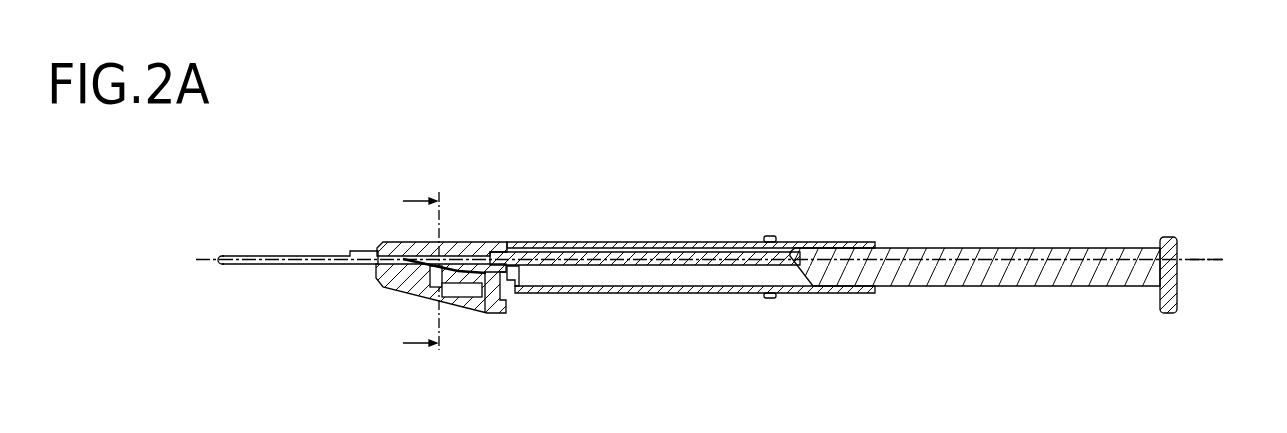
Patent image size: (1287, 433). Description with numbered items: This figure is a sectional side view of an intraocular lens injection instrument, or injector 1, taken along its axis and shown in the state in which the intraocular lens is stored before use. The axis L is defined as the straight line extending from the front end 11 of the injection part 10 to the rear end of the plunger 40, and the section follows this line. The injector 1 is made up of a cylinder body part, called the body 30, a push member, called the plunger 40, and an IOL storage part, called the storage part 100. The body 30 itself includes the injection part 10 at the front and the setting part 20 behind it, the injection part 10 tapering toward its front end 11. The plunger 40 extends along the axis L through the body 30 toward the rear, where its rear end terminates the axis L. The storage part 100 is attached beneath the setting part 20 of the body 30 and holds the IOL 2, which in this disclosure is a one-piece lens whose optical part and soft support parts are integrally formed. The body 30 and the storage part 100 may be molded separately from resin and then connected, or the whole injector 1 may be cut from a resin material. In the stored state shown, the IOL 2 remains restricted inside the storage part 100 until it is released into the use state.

The injector 1 is at (1080, 195).
The IOL 2 is at (460, 313).
The injection part 10 is at (306, 254).
The front end 11 is at (221, 256).
The setting part 20 is at (472, 242).
The cylinder body part 30 is at (790, 293).
The plunger 40 is at (1017, 284).
The IOL storage part 100 is at (493, 322).
The axis L is at (1207, 260).